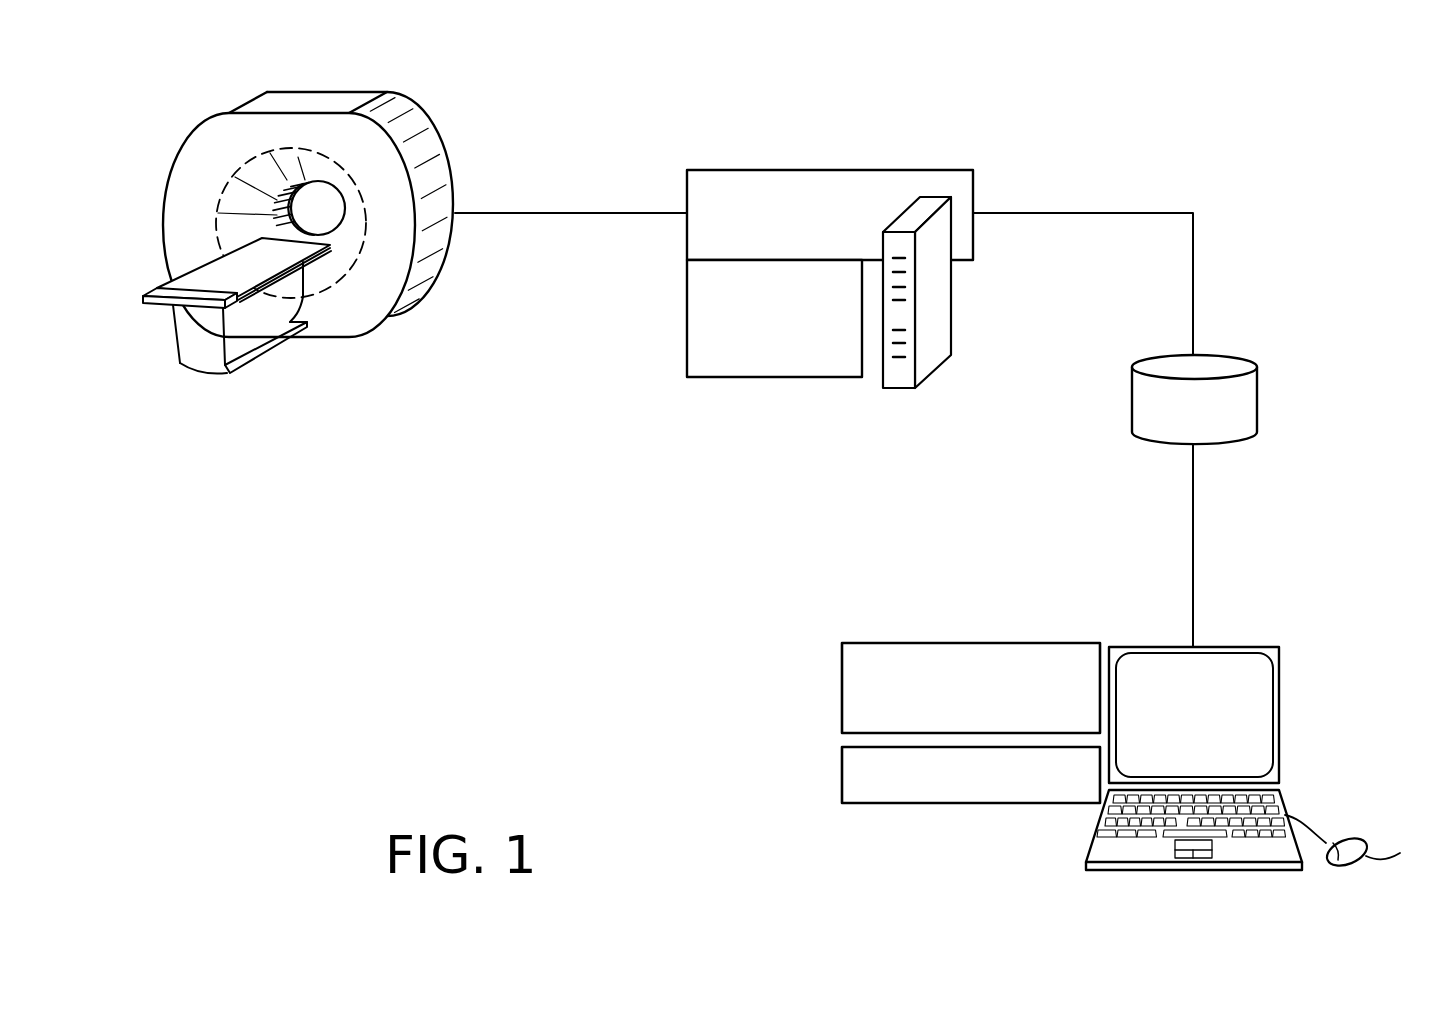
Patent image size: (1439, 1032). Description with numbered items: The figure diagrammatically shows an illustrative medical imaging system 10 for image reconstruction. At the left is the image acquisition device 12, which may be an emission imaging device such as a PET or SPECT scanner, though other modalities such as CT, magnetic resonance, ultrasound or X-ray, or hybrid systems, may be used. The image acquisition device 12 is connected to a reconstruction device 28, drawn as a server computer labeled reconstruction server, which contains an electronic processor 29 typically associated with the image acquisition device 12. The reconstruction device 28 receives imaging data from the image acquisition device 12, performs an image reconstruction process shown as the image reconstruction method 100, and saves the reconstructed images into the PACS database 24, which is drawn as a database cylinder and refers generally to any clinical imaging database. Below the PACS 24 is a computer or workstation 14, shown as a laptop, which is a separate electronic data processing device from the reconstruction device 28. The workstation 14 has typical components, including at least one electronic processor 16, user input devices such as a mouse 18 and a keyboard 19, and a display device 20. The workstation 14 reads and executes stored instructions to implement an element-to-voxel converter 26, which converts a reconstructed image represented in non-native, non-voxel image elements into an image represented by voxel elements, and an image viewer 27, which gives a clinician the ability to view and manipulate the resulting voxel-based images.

The medical imaging system 10 is at (1258, 155).
The image acquisition device 12 is at (173, 325).
The workstation 14 is at (1233, 732).
The electronic processor 16 is at (1234, 715).
The mouse 18 is at (1362, 843).
The keyboard 19 is at (1100, 835).
The display device 20 is at (1180, 726).
The PACS database 24 is at (1257, 398).
The element-to-voxel converter 26 is at (840, 688).
The image viewer 27 is at (840, 773).
The reconstruction device 28 is at (858, 277).
The electronic processor 29 is at (951, 307).
The image reconstruction method 100 is at (777, 378).